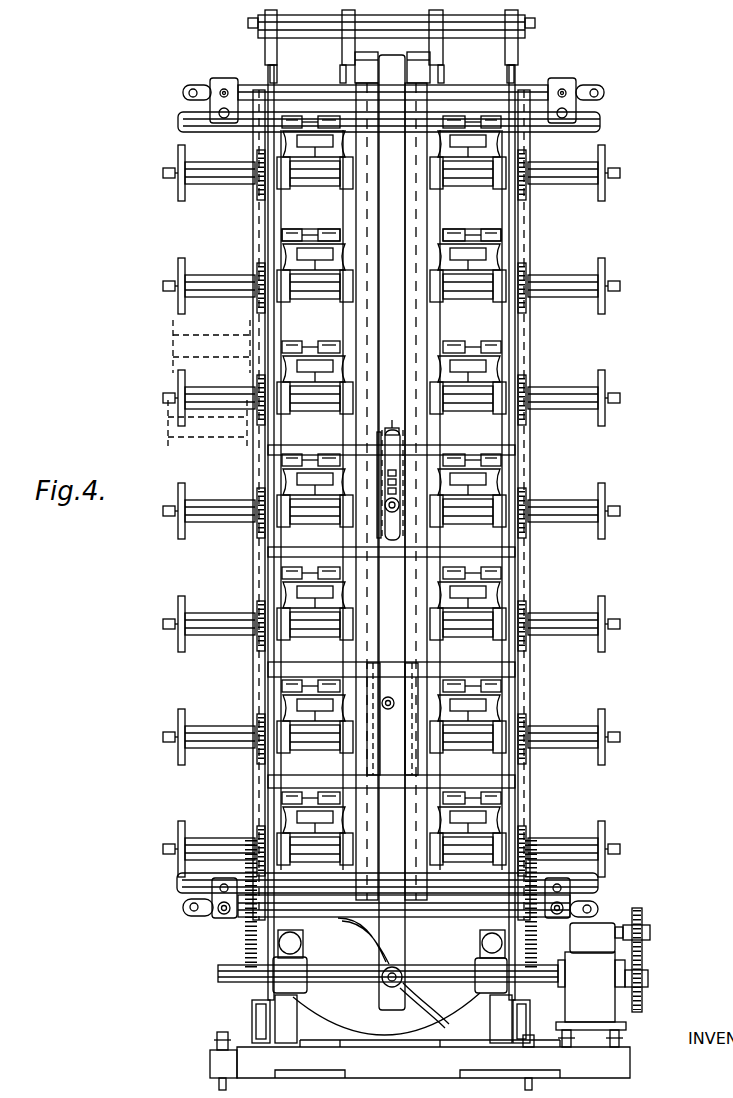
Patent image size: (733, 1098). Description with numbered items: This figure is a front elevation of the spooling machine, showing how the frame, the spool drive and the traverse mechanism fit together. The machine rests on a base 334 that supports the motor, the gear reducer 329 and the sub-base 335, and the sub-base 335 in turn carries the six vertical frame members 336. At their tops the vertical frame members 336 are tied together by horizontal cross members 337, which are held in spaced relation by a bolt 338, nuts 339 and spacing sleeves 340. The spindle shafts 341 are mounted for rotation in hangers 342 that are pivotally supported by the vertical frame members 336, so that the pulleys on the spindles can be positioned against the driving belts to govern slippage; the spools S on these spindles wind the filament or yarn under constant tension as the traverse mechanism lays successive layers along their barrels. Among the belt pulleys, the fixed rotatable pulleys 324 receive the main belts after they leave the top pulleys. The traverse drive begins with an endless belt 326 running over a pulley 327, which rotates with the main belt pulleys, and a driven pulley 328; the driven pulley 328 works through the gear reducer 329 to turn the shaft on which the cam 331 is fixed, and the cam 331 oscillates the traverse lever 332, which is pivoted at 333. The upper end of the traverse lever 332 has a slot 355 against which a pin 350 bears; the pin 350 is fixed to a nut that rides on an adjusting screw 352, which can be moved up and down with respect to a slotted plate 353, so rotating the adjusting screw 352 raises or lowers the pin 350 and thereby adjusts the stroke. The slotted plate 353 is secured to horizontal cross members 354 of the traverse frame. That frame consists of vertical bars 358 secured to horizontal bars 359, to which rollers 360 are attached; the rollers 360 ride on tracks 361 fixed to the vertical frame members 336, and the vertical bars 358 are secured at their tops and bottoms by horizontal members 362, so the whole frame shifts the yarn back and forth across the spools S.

The spool S is at (605, 275).
The fixed rotatable pulley 324 is at (375, 930).
The endless belt 326 is at (645, 912).
The pulley 327 is at (652, 932).
The driven pulley 328 is at (650, 980).
The gear reducer 329 is at (591, 985).
The cam 331 is at (415, 1005).
The traverse lever 332 is at (385, 745).
The pivot 333 is at (385, 700).
The base 334 is at (210, 1062).
The sub-base 335 is at (252, 1005).
The vertical frame member 336 is at (340, 72).
The horizontal cross member 337 is at (268, 45).
The bolt 338 is at (248, 22).
The nut 339 is at (262, 35).
The spacing sleeve 340 is at (318, 20).
The spindle shaft 341 is at (285, 298).
The hanger 342 is at (295, 245).
The pin 350 is at (398, 507).
The adjusting screw 352 is at (392, 428).
The slotted plate 353 is at (378, 450).
The horizontal cross member 354 is at (410, 455).
The slot 355 is at (385, 520).
The vertical bar 358 is at (255, 220).
The horizontal bar 359 is at (460, 90).
The roller 360 is at (220, 80).
The track 361 is at (600, 122).
The horizontal member 362 is at (183, 93).